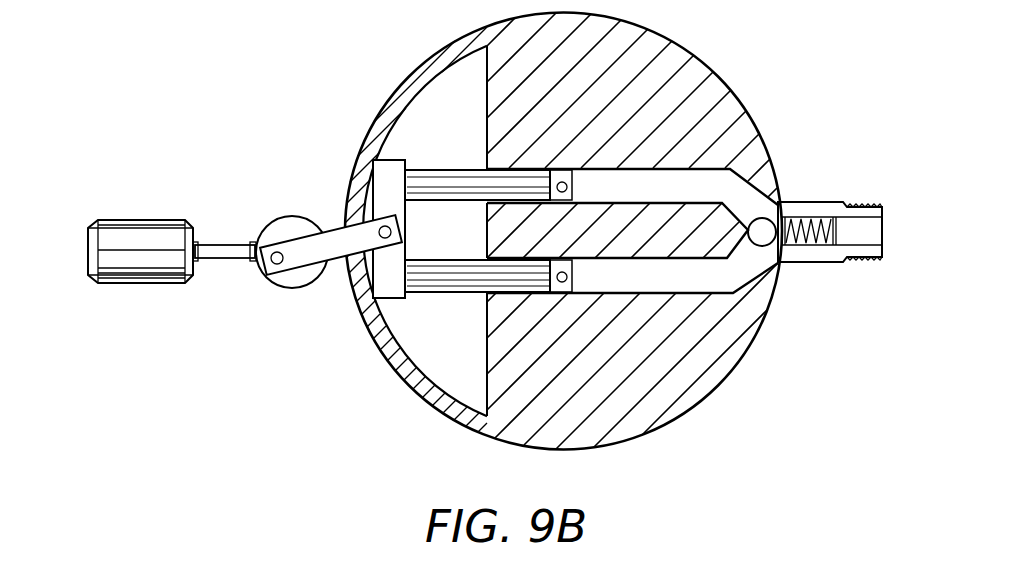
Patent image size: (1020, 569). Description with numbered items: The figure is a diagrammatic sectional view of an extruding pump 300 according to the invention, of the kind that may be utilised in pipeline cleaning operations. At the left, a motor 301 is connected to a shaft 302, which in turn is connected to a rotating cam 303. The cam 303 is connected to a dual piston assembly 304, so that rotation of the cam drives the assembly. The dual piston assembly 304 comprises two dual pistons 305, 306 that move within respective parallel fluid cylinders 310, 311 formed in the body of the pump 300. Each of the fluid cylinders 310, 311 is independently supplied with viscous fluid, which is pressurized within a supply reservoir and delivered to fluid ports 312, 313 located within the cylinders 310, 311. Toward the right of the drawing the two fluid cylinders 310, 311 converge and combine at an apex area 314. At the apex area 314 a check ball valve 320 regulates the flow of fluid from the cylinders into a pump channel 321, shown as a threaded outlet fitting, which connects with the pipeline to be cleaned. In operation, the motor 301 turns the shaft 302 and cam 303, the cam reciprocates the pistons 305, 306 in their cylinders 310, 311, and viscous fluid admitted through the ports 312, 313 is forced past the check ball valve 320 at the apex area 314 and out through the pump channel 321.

The extruding pump 300 is at (705, 398).
The motor 301 is at (131, 219).
The shaft 302 is at (222, 244).
The rotating cam 303 is at (292, 215).
The dual piston assembly 304 is at (396, 130).
The dual piston 305 is at (450, 178).
The dual piston 306 is at (455, 280).
The fluid cylinder 310 is at (662, 292).
The fluid cylinder 311 is at (674, 168).
The fluid port 312 is at (565, 283).
The fluid port 313 is at (561, 181).
The apex area 314 is at (752, 208).
The check ball valve 320 is at (782, 210).
The pump channel 321 is at (880, 263).